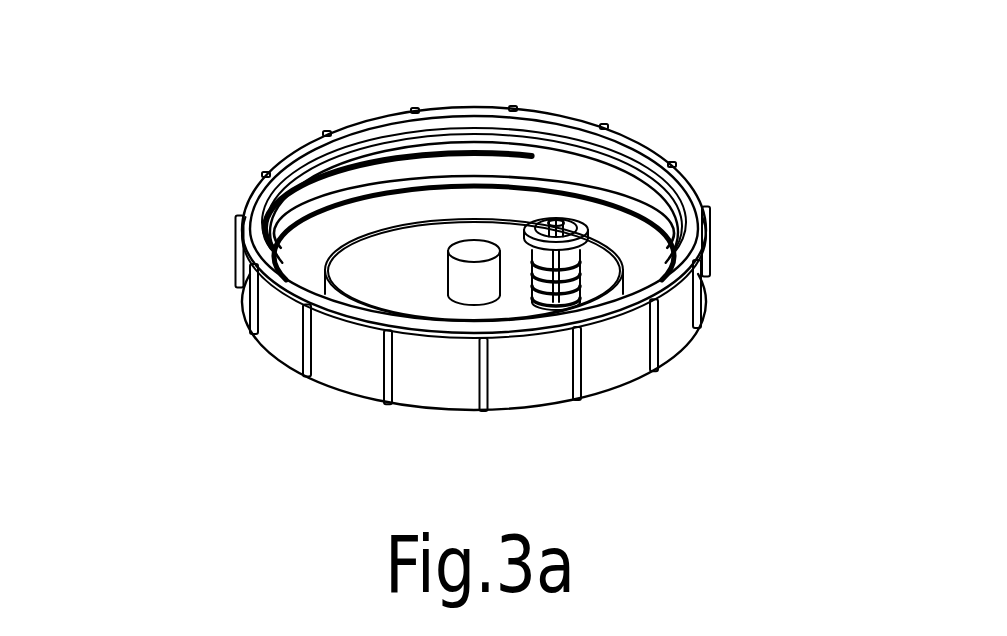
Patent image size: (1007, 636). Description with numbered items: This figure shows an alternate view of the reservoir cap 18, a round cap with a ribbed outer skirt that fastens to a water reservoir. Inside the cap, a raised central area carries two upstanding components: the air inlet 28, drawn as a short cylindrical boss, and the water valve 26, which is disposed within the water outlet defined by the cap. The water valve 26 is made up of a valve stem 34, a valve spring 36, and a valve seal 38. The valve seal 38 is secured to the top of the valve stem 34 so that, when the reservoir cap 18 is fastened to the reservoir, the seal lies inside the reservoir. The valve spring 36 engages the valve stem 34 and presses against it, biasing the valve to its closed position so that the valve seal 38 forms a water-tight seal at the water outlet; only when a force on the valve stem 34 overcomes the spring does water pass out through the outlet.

The reservoir cap 18 is at (212, 136).
The water valve 26 is at (628, 252).
The air inlet 28 is at (473, 254).
The valve stem 34 is at (579, 292).
The valve spring 36 is at (547, 303).
The valve seal 38 is at (535, 218).